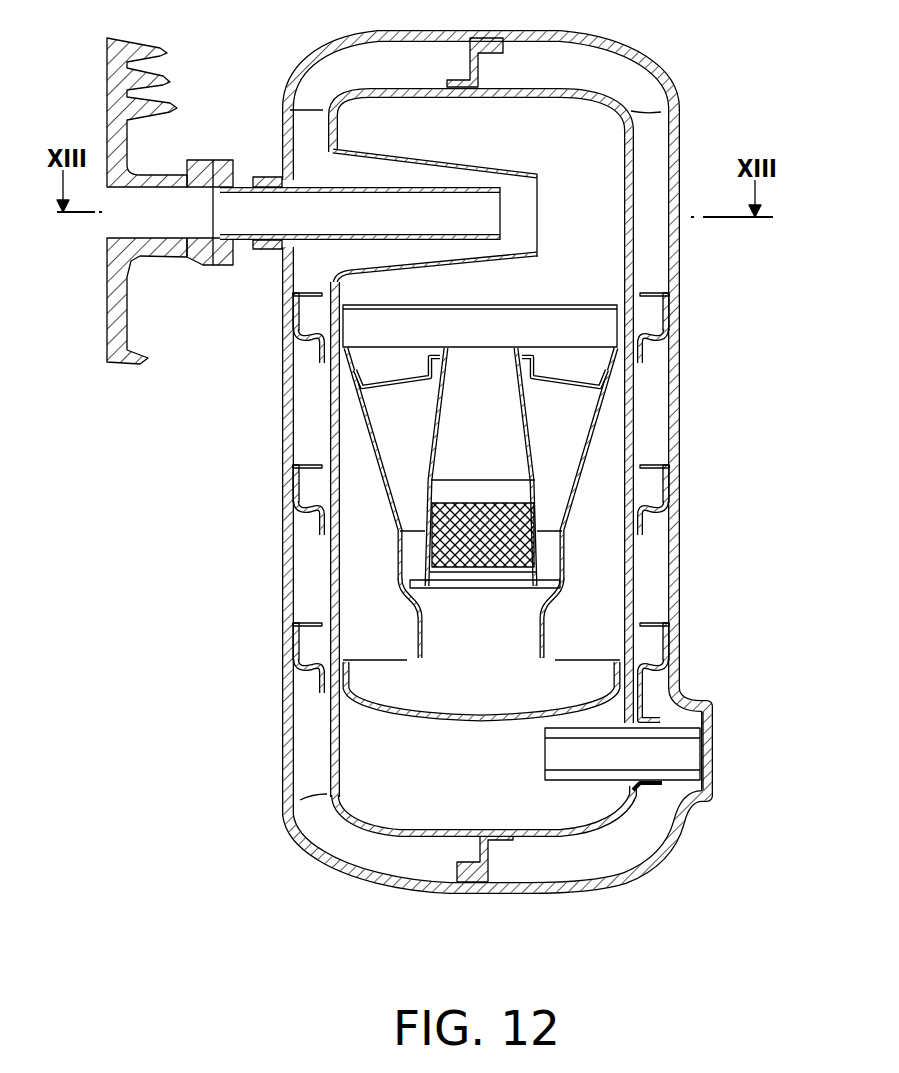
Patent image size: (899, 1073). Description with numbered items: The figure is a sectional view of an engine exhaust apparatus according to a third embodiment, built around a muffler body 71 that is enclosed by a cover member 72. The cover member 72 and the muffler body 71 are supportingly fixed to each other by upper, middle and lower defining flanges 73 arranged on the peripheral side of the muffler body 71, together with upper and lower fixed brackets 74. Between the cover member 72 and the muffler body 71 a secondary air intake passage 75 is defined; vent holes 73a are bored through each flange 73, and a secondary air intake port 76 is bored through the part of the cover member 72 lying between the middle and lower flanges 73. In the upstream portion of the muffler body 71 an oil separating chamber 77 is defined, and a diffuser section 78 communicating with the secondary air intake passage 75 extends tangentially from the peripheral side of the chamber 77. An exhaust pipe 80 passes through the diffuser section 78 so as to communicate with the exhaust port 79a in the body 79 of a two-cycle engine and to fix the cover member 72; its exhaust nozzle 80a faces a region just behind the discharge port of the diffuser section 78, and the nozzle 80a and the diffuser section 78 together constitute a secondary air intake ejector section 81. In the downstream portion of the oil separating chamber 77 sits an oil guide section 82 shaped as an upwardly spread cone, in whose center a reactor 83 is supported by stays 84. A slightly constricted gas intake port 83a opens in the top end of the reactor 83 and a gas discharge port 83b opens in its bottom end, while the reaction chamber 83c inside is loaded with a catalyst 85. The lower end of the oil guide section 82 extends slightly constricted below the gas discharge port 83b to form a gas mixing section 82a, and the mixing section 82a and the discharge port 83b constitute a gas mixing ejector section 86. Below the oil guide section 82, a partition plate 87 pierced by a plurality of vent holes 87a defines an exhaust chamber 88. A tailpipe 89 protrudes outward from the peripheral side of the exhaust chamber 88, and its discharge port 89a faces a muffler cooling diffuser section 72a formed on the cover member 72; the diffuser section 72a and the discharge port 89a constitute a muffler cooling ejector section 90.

The muffler body 71 is at (542, 64).
The cover member 72 is at (338, 52).
The muffler cooling diffuser section 72a is at (713, 760).
The defining flange 73 is at (650, 313).
The vent hole 73a is at (657, 338).
The fixed bracket 74 is at (470, 58).
The secondary air intake passage 75 is at (653, 125).
The secondary air intake port 76 is at (683, 582).
The oil separating chamber 77 is at (617, 217).
The diffuser section 78 is at (477, 167).
The body of two-cycle engine 79 is at (163, 70).
The exhaust port 79a is at (165, 140).
The exhaust pipe 80 is at (377, 187).
The exhaust nozzle 80a is at (487, 203).
The secondary air intake ejector section 81 is at (527, 175).
The oil guide section 82 is at (358, 418).
The gas mixing section 82a is at (448, 647).
The reactor 83 is at (423, 477).
The gas intake port 83a is at (487, 347).
The gas discharge port 83b is at (448, 583).
The reaction chamber 83c is at (513, 450).
The stay 84 is at (397, 387).
The catalyst 85 is at (560, 570).
The gas mixing ejector section 86 is at (517, 593).
The partition plate 87 is at (417, 720).
The vent hole 87a is at (517, 720).
The exhaust chamber 88 is at (347, 743).
The tailpipe 89 is at (552, 780).
The discharge port 89a is at (715, 773).
The muffler cooling ejector section 90 is at (702, 720).